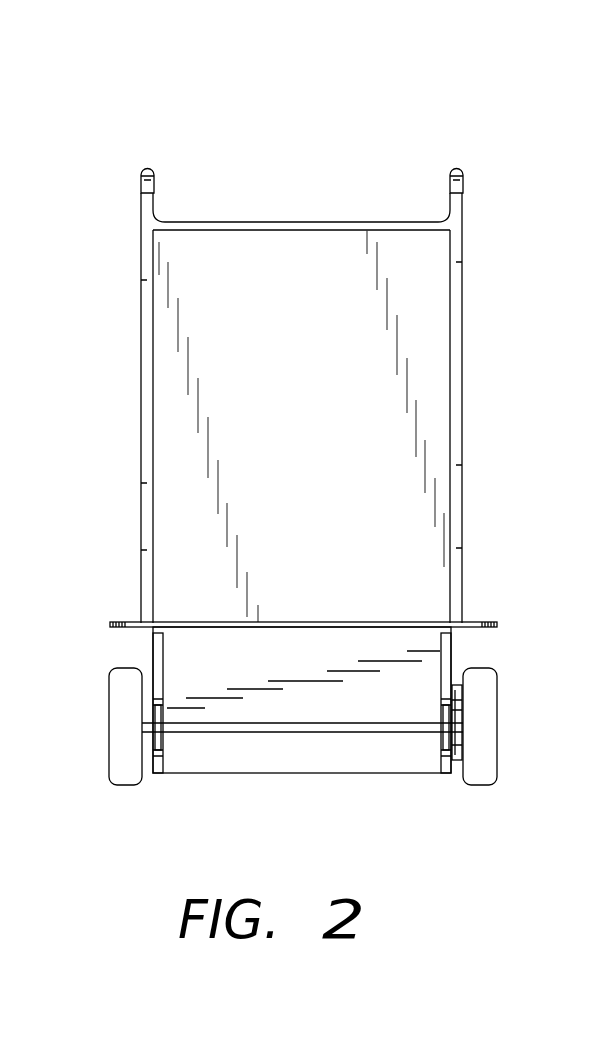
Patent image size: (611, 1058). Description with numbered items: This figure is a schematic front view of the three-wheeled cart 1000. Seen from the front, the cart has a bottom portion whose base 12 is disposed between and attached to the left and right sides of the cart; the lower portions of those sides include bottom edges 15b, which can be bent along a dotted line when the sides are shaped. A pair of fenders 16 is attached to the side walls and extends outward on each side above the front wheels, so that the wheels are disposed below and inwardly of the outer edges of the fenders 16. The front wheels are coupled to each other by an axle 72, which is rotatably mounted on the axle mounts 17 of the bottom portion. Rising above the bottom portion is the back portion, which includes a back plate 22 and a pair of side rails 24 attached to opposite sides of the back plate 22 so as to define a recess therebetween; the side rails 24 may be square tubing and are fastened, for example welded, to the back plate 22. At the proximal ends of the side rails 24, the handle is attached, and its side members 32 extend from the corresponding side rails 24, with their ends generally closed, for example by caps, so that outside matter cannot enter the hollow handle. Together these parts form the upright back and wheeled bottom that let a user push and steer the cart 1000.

The three-wheeled cart 1000 is at (442, 110).
The side rails 24 is at (142, 353).
The side members 32 is at (462, 183).
The back plate 22 is at (305, 358).
The fenders 16 is at (127, 622).
The base 12 is at (308, 663).
The bottom edges 15b is at (157, 648).
The axle 72 is at (264, 726).
The axle mounts 17 is at (167, 736).